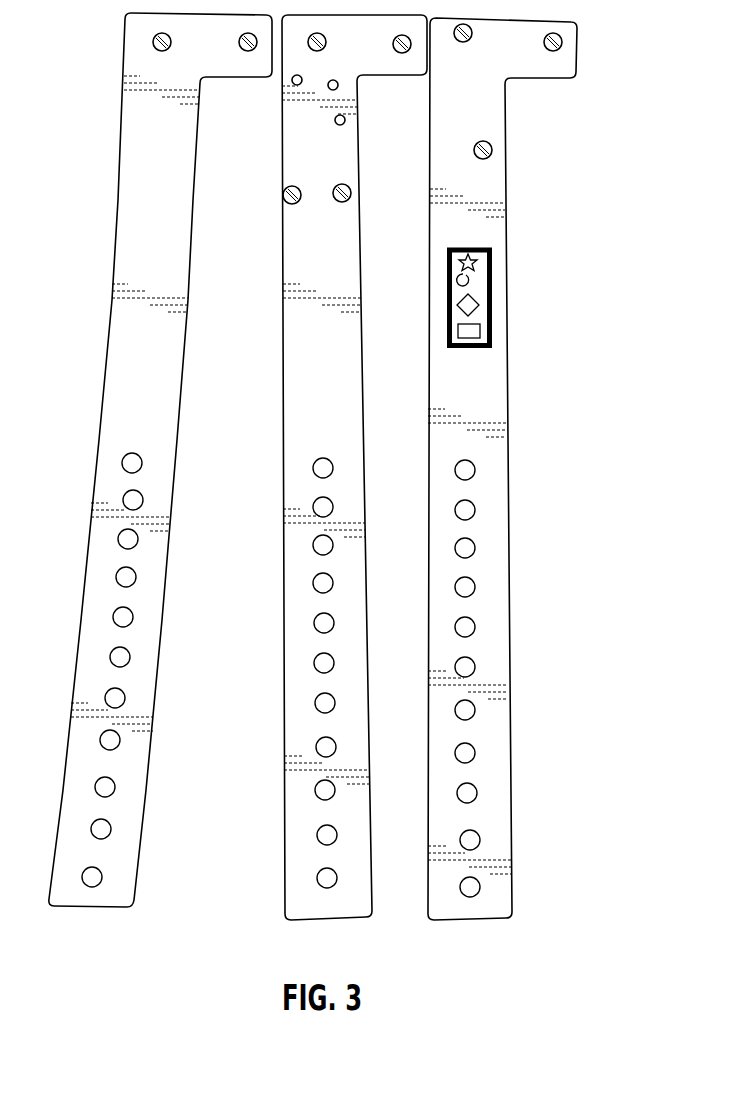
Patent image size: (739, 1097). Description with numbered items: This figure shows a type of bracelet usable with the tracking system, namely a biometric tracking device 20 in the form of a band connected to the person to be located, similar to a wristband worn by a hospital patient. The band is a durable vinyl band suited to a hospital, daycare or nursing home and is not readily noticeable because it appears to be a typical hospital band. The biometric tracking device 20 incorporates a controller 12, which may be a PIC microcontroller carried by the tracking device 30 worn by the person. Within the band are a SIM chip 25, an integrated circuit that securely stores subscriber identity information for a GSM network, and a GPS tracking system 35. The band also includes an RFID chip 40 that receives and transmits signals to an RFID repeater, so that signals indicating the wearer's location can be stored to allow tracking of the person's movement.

The biometric tracking device 20 is at (563, 468).
The RFID chip 40 is at (462, 276).
The GPS tracking system 35 is at (489, 259).
The tracking device 30 is at (478, 275).
The controller 12 is at (480, 306).
The SIM chip 25 is at (490, 342).